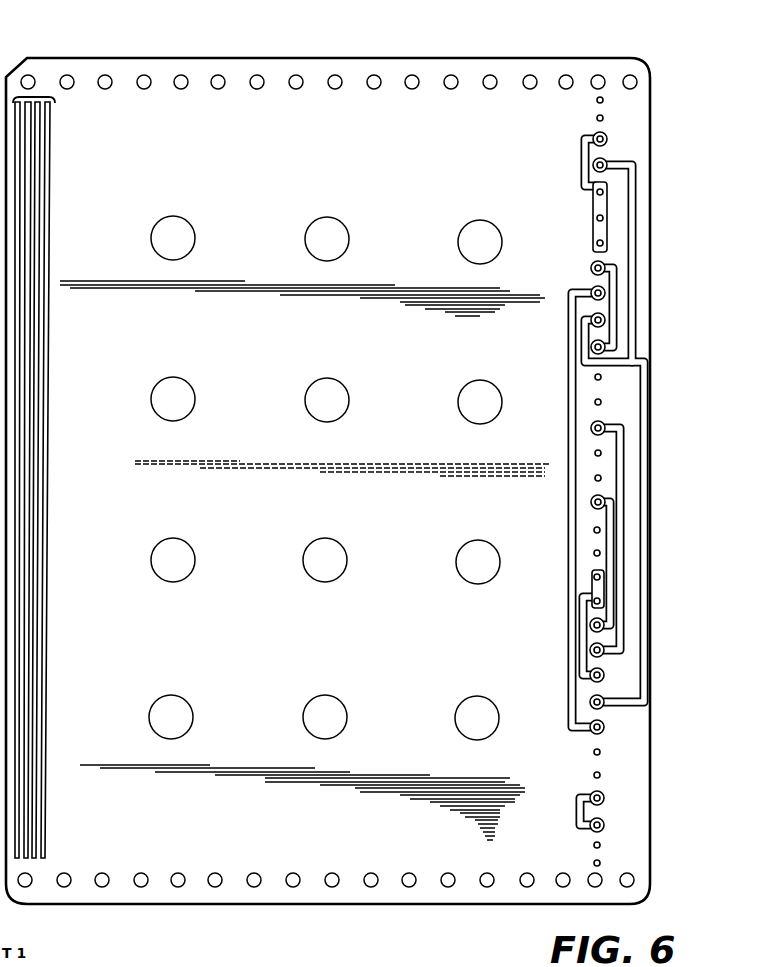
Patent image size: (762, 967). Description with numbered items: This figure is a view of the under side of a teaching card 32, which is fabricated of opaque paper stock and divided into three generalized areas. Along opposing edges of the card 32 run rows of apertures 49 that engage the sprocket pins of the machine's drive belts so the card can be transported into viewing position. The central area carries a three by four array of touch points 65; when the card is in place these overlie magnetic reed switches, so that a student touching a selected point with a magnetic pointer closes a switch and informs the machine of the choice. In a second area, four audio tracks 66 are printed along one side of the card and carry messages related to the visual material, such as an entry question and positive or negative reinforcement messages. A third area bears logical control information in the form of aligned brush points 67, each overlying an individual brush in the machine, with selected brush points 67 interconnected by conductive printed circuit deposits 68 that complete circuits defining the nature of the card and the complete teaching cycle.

The card 32 is at (432, 80).
The apertures 49 is at (181, 874).
The touch points 65 is at (196, 230).
The audio tracks 66 is at (40, 94).
The brush points 67 is at (606, 162).
The conductive printed circuit deposits 68 is at (582, 158).